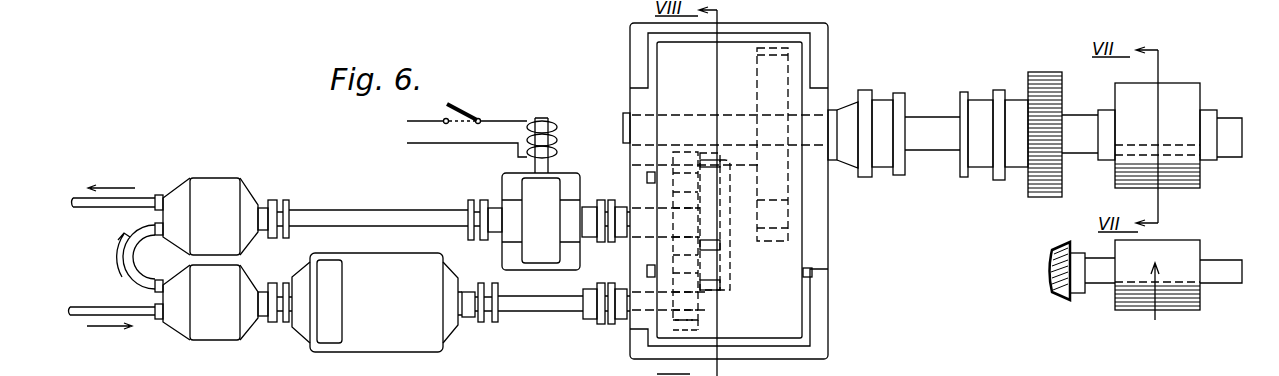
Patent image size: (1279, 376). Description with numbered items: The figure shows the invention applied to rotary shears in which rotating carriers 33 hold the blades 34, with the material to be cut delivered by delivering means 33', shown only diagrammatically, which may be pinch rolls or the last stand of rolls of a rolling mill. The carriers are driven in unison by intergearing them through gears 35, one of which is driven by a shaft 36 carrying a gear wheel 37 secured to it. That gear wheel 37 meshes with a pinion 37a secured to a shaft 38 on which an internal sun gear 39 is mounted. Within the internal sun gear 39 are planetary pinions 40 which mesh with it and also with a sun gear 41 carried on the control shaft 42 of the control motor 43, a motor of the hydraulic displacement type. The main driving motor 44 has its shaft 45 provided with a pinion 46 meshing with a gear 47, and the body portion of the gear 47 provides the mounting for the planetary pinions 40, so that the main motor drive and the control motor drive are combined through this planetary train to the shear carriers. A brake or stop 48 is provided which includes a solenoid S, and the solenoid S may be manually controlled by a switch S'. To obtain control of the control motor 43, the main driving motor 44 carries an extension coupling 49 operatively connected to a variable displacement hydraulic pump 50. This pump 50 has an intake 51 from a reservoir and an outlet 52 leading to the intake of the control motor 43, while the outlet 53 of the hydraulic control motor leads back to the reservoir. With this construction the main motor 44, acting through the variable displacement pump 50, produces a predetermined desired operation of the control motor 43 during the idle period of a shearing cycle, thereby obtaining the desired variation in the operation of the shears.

The rotating carrier 33 is at (1152, 122).
The delivering means 33' is at (1146, 290).
The blade 34 is at (1133, 143).
The gear 35 is at (1050, 195).
The shaft 36 is at (935, 143).
The gear wheel 37 is at (770, 45).
The pinion 37a is at (778, 245).
The shaft 38 is at (812, 212).
The internal sun gear 39 is at (713, 155).
The planetary pinion 40 is at (745, 165).
The sun gear 41 is at (728, 256).
The control shaft 42 is at (690, 232).
The control motor 43 is at (222, 170).
The main driving motor 44 is at (383, 342).
The shaft 45 is at (545, 303).
The pinion 46 is at (680, 318).
The gear 47 is at (633, 162).
The brake or stop 48 is at (515, 180).
The extension coupling 49 is at (275, 320).
The variable displacement hydraulic pump 50 is at (218, 337).
The intake 51 is at (148, 318).
The outlet 52 is at (128, 253).
The outlet 53 is at (150, 190).
The solenoid s is at (493, 141).
The switch s' is at (451, 106).